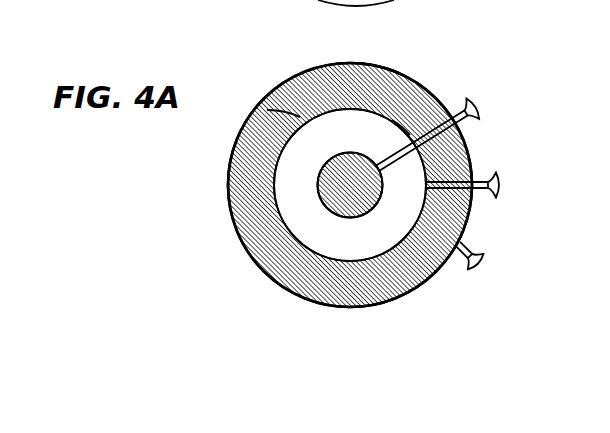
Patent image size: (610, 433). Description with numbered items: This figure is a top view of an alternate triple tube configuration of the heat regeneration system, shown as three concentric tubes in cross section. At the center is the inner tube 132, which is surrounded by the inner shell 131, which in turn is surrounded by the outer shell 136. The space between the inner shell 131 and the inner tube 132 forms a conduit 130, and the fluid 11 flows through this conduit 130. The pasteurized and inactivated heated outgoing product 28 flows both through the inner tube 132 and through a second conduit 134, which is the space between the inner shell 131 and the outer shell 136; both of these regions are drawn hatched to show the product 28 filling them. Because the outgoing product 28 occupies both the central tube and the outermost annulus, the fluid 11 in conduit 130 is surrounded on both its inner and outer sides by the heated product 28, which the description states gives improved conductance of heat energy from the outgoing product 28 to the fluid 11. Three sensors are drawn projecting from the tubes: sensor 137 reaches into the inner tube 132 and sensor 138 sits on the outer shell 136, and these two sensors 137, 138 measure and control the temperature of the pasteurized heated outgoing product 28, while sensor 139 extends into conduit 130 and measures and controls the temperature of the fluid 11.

The fluid 11 is at (286, 186).
The pasteurized outgoing product 28 is at (262, 256).
The conduit 130 is at (313, 140).
The inner shell 131 is at (403, 125).
The inner tube 132 is at (381, 184).
The conduit 134 is at (377, 70).
The outer shell 136 is at (431, 97).
The sensor 137 is at (483, 103).
The sensor 138 is at (489, 258).
The sensor 139 is at (502, 185).